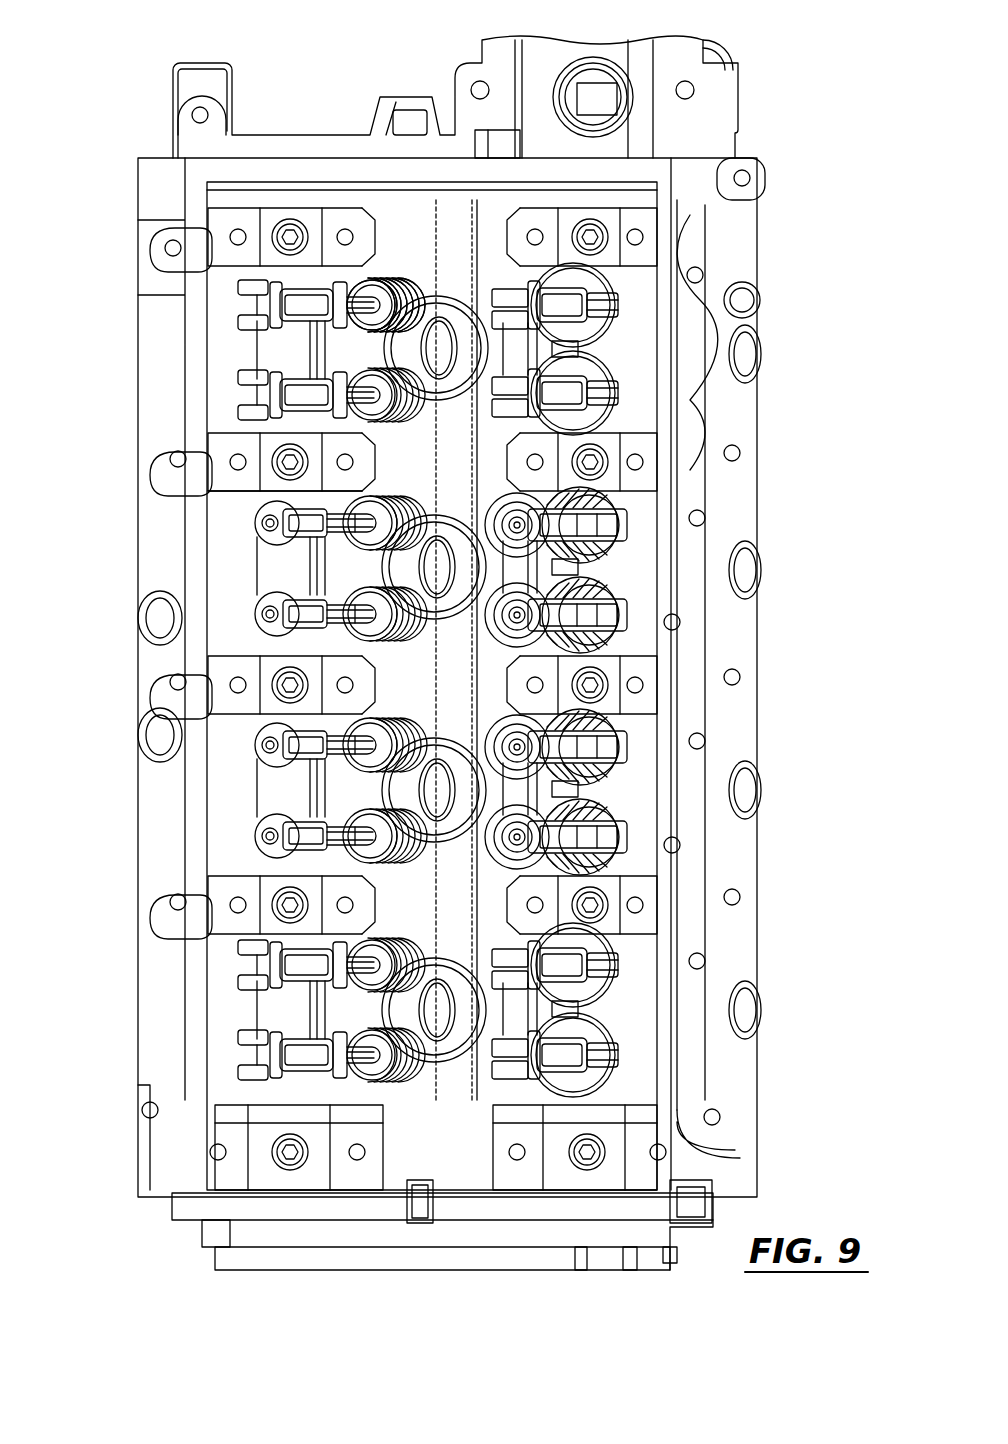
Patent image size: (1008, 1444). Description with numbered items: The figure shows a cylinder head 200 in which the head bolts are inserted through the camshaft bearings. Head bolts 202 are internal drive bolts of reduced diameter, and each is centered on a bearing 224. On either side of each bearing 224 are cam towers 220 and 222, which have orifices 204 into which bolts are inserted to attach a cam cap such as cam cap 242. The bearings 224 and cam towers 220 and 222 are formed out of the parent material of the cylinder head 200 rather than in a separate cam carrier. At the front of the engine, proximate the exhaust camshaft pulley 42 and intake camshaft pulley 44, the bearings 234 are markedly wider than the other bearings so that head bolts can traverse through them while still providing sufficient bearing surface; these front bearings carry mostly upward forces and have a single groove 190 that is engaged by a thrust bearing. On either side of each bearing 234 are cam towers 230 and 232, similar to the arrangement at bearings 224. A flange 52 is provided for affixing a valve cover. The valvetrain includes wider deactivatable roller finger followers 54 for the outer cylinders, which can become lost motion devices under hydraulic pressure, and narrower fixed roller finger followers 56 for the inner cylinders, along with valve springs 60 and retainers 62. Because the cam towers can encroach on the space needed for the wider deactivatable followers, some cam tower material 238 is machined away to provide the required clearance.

The cylinder head 200 is at (785, 158).
The head bolts 202 is at (290, 237).
The orifices 204 is at (345, 235).
The cam tower 220 is at (173, 248).
The cam tower 222 is at (520, 222).
The bearing 224 is at (572, 222).
The flange 52 is at (740, 270).
The deactivatable roller finger followers 54 is at (250, 305).
The fixed roller finger followers 56 is at (270, 523).
The valve springs 60 is at (418, 292).
The retainers 62 is at (385, 303).
The material from cam towers 238 is at (490, 486).
The cam caps 242 is at (280, 490).
The groove 190 is at (398, 1120).
The cam tower 230 is at (228, 1170).
The cam tower 232 is at (510, 1177).
The bearings 234 is at (258, 1175).
The exhaust camshaft pulley 42 is at (222, 1232).
The intake camshaft pulley 44 is at (565, 1245).